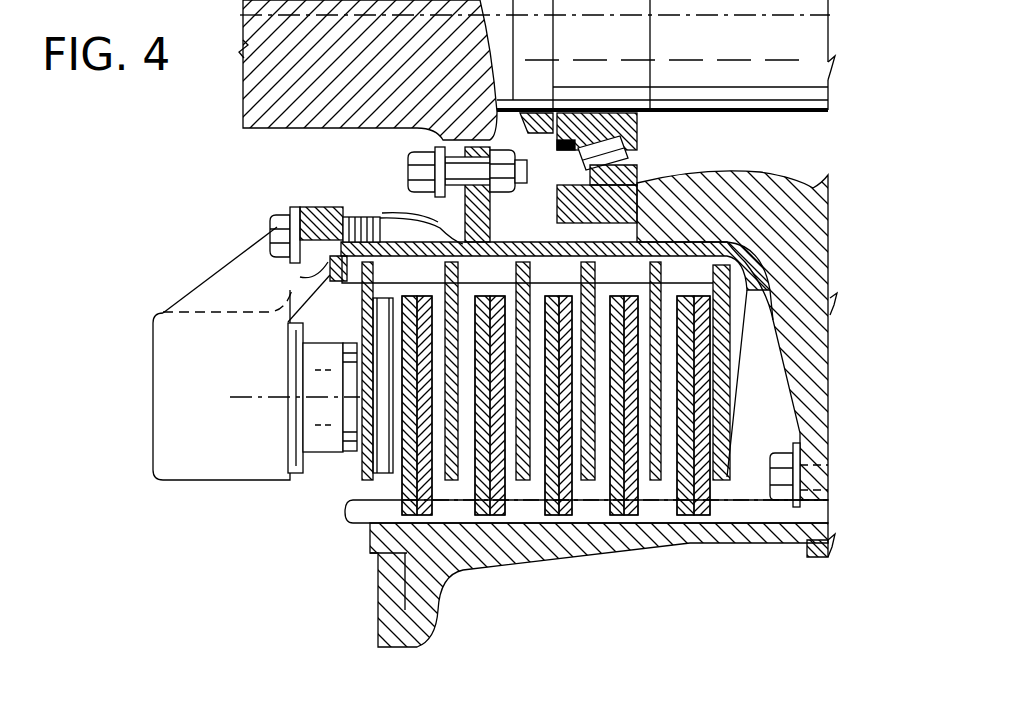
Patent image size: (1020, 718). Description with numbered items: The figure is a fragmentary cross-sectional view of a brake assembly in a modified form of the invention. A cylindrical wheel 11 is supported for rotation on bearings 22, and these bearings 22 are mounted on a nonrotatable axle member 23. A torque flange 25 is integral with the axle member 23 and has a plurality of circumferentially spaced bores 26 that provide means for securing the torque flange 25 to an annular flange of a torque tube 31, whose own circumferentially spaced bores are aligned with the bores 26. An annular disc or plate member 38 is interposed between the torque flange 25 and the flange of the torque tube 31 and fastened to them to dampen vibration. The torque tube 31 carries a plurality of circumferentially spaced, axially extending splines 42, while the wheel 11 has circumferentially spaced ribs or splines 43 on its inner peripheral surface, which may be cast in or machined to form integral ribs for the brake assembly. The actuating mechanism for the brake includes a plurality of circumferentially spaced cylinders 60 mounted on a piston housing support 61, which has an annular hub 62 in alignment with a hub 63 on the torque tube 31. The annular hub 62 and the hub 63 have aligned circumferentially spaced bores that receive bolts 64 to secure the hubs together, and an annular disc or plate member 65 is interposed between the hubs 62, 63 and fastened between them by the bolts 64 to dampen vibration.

The cylindrical wheel 11 is at (617, 572).
The bearings 22 is at (628, 145).
The nonrotatable axle member 23 is at (262, 96).
The torque flange 25 is at (440, 213).
The bores 26 is at (433, 168).
The torque tube 31 is at (536, 252).
The annular disc or plate member 38 is at (463, 147).
The splines 42 is at (638, 266).
The ribs or splines 43 is at (650, 513).
The cylinders 60 is at (330, 436).
The piston housing support 61 is at (177, 433).
The annular hub 62 is at (310, 206).
The hub 63 is at (370, 214).
The bolts 64 is at (277, 243).
The annular disc or plate member 65 is at (300, 277).